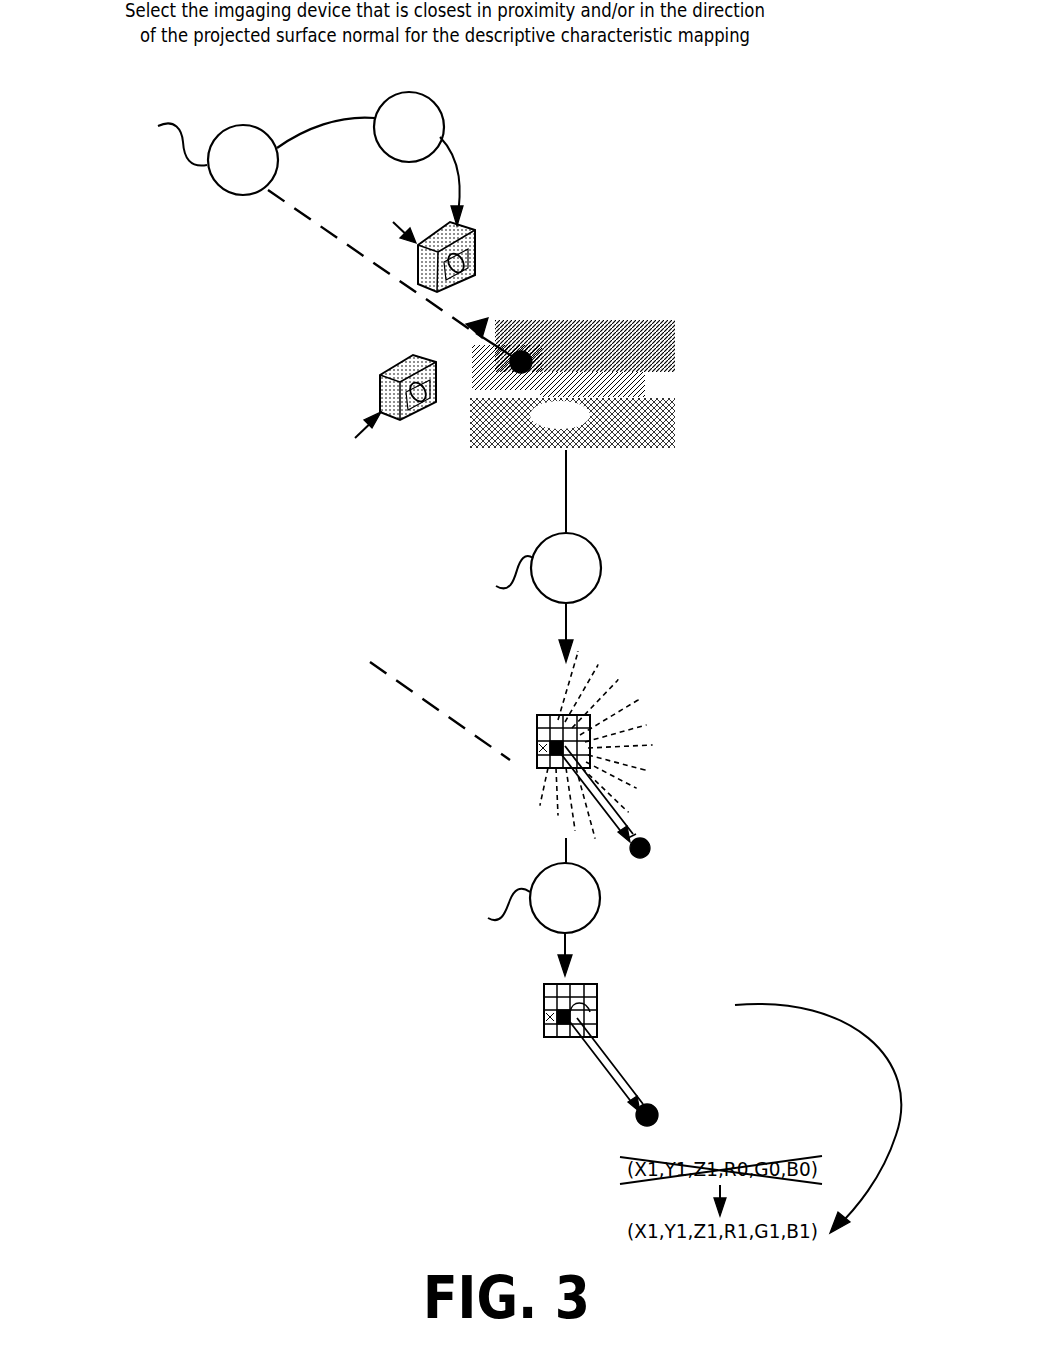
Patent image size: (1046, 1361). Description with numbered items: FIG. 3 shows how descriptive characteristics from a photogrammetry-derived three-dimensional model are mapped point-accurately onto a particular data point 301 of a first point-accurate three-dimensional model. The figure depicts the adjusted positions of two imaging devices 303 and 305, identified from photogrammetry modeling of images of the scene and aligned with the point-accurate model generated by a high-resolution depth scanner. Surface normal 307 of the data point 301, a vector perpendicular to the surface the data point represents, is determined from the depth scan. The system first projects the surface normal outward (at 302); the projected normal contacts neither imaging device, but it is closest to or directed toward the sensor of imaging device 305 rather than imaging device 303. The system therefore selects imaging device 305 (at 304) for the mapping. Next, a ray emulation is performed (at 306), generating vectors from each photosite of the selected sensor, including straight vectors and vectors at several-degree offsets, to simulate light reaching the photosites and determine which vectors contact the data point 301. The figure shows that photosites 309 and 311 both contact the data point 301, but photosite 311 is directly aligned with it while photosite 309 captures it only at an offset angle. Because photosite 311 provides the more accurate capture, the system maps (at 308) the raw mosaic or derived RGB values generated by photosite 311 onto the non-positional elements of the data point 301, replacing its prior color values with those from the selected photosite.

The data point 301 is at (532, 362).
The projecting the surface normal 302 is at (259, 170).
The imaging device 303 is at (388, 362).
The selecting the imaging device 304 is at (449, 58).
The imaging device 305 is at (477, 265).
The ray emulation 306 is at (582, 576).
The surface normal 307 is at (506, 345).
The mapping the descriptive characteristics 308 is at (581, 906).
The photosite 309 is at (541, 755).
The photosite 311 is at (538, 741).